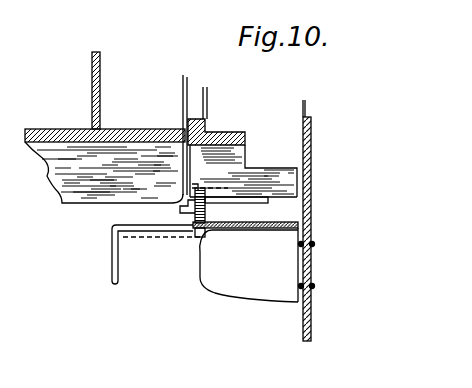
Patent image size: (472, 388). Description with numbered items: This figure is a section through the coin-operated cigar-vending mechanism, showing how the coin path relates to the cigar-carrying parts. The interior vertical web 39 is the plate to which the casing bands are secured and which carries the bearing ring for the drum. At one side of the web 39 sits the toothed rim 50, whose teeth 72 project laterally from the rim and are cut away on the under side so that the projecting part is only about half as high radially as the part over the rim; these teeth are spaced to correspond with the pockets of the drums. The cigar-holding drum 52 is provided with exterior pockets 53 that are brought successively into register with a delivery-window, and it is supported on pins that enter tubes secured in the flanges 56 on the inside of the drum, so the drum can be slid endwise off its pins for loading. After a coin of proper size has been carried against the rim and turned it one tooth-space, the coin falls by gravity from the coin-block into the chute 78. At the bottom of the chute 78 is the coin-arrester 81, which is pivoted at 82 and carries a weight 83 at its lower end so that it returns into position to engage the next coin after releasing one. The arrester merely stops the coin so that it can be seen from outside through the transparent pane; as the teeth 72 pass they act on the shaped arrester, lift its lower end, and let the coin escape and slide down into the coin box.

The web 39 is at (312, 207).
The toothed rim 50 is at (236, 131).
The cigar-holding drum 52 is at (117, 133).
The pocket 53 is at (104, 172).
The flange 56 is at (101, 77).
The teeth 72 is at (259, 178).
The chute 78 is at (249, 265).
The coin-arrester 81 is at (208, 214).
The pivot 82 is at (180, 207).
The weight 83 is at (258, 203).